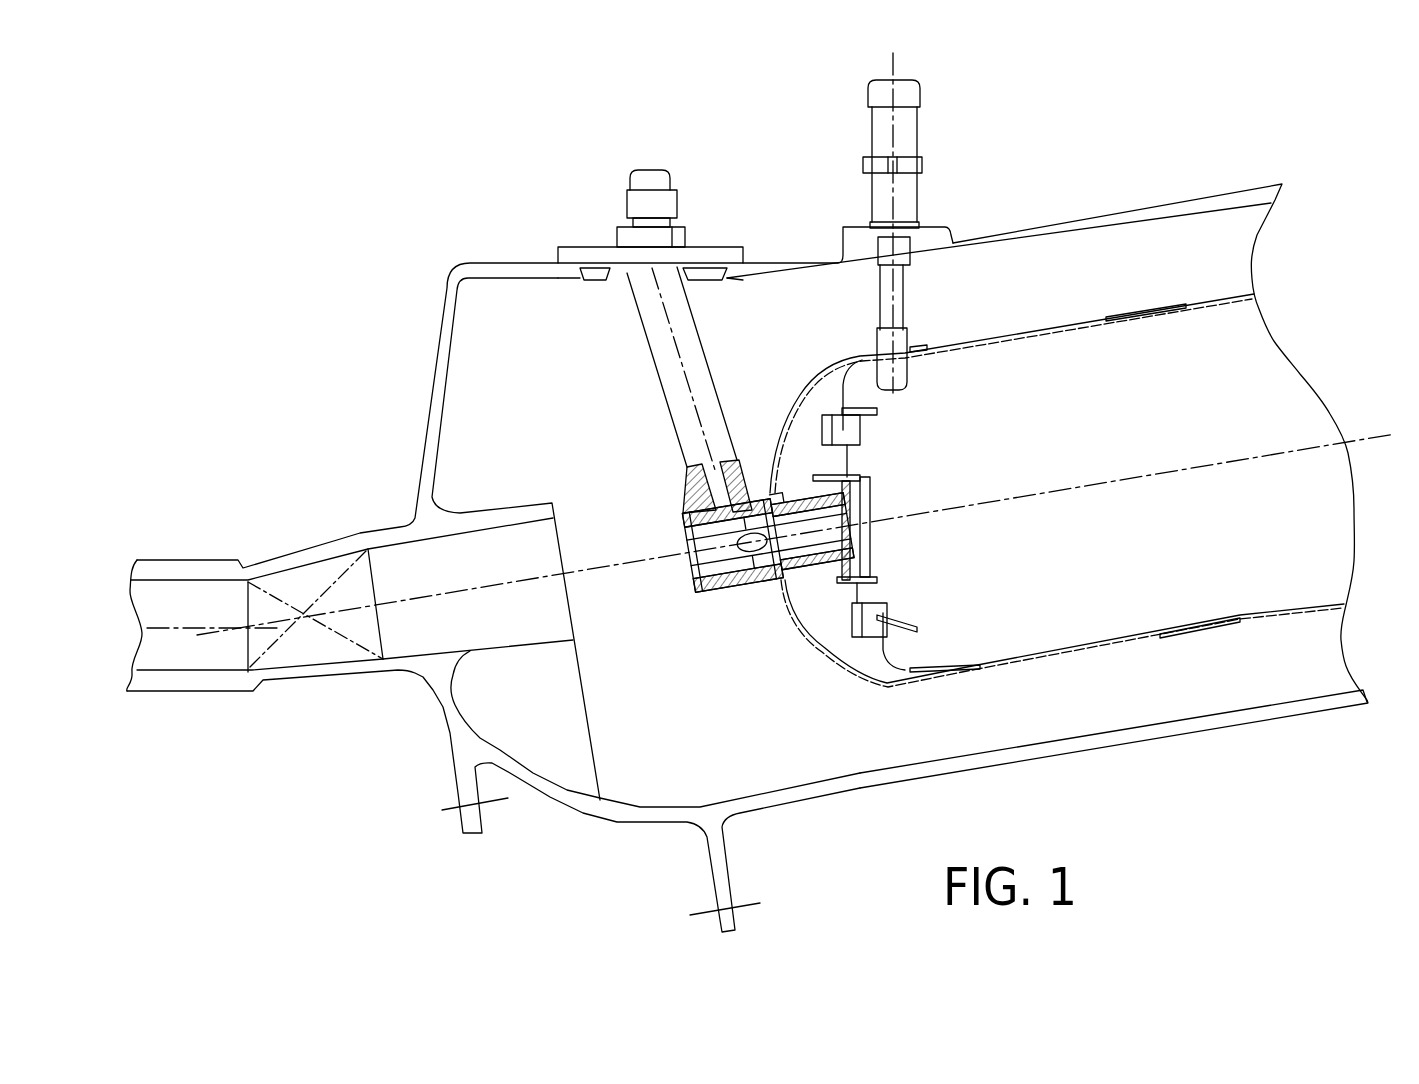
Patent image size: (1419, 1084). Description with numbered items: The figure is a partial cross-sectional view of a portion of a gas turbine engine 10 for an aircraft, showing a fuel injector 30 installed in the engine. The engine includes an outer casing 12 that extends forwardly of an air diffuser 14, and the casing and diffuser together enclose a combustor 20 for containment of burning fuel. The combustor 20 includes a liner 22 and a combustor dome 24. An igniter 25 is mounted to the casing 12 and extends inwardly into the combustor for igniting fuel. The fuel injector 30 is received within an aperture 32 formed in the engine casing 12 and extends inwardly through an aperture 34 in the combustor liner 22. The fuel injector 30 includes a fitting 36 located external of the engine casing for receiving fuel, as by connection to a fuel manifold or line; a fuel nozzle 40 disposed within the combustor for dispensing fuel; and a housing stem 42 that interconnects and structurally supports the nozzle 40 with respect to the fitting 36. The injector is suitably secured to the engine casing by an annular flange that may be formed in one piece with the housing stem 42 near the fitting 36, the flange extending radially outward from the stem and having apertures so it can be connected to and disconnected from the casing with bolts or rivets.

The gas turbine engine 10 is at (963, 198).
The outer casing 12 is at (1134, 210).
The air diffuser 14 is at (440, 343).
The combustor 20 is at (1194, 290).
The liner 22 is at (1128, 313).
The combustor dome 24 is at (873, 442).
The igniter 25 is at (937, 132).
The fuel injector 30 is at (580, 210).
The aperture 32 is at (600, 278).
The aperture 34 is at (783, 580).
The fitting 36 is at (680, 197).
The fuel nozzle 40 is at (727, 588).
The housing stem 42 is at (700, 380).